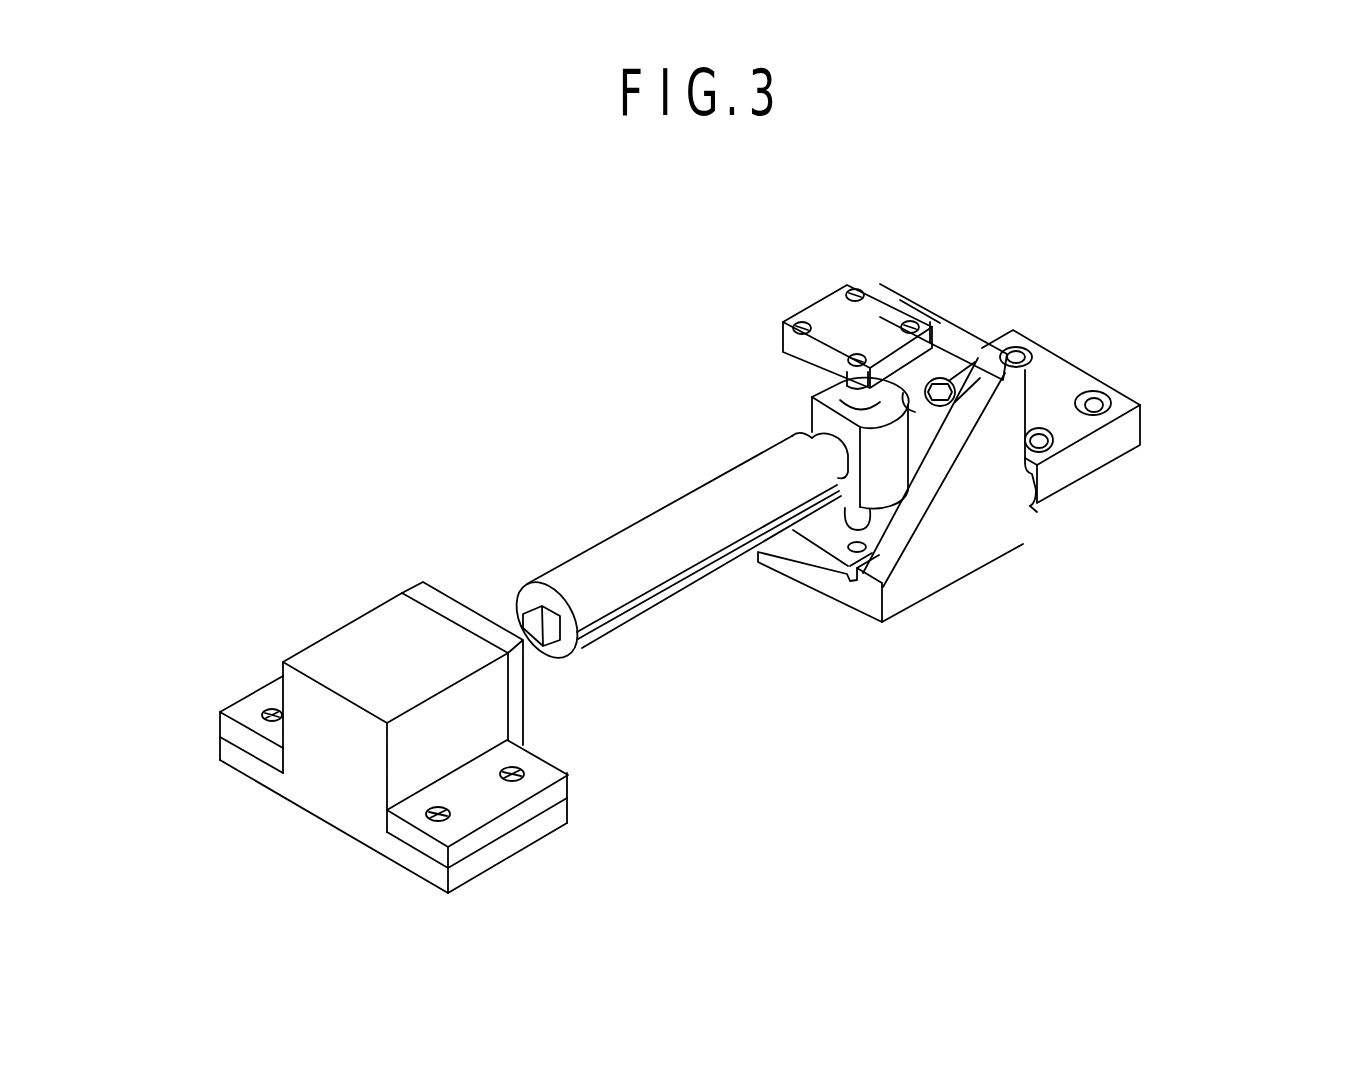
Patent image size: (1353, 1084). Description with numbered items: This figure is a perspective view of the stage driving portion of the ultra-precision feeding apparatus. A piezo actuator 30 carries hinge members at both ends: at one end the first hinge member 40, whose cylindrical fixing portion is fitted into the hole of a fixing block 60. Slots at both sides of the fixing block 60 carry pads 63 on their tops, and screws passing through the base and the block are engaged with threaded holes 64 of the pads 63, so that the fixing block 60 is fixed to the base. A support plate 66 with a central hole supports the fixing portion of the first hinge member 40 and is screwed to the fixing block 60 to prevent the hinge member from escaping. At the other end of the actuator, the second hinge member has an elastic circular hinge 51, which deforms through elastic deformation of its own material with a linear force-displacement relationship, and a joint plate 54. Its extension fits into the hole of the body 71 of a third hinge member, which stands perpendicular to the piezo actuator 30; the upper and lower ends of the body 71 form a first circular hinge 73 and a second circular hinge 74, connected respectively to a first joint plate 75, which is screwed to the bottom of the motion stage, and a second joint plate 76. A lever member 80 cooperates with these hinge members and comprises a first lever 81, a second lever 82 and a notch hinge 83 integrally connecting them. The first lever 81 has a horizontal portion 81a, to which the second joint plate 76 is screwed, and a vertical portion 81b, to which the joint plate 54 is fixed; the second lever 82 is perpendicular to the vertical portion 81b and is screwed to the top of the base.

The piezo actuator 30 is at (608, 407).
The first hinge member 40 is at (507, 611).
The circular hinge 51 is at (898, 400).
The joint plate 54 is at (943, 335).
The fixing block 60 is at (322, 800).
The pads 63 is at (248, 707).
The threaded holes 64 is at (510, 780).
The support plate 66 is at (425, 593).
The body 71 is at (895, 467).
The first circular hinge 73 is at (702, 372).
The second circular hinge 74 is at (885, 528).
The first joint plate 75 is at (793, 205).
The second joint plate 76 is at (743, 627).
The lever member 80 is at (1010, 527).
The first lever 81 is at (896, 589).
The horizontal portion 81a is at (798, 665).
The vertical portion 81b is at (975, 340).
The second lever 82 is at (1122, 419).
The notch hinge 83 is at (1033, 506).